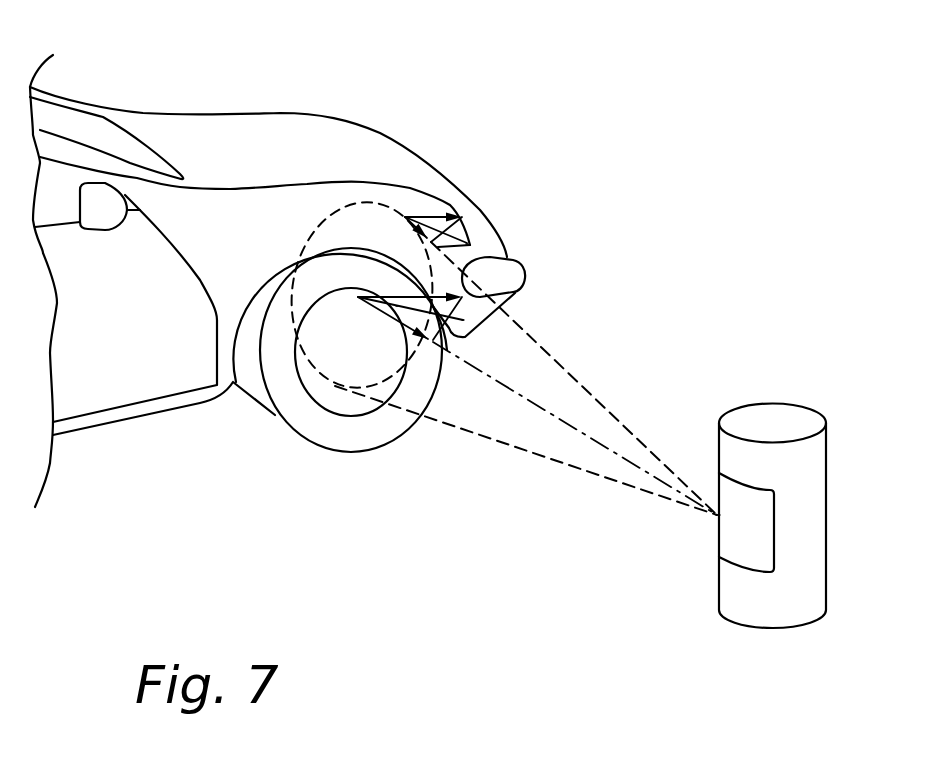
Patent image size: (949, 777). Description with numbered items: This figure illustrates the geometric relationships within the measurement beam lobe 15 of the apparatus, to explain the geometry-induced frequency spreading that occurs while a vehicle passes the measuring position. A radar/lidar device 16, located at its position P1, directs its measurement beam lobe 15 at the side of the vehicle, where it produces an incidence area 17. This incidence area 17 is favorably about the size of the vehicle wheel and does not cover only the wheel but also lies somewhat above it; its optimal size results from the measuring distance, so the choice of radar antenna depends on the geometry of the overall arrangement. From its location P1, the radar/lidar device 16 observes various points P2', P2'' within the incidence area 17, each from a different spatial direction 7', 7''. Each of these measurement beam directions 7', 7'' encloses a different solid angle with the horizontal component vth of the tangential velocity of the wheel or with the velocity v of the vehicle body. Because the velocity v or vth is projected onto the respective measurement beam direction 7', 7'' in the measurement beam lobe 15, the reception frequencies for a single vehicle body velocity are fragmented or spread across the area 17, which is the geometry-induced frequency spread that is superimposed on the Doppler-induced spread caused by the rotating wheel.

The incidence area 17 is at (305, 240).
The measurement beam lobe 15 is at (640, 455).
The radar/lidar device 16 is at (827, 515).
The spatial direction 7' is at (574, 378).
The spatial direction 7'' is at (526, 450).
The location of the radar/lidar device P1 is at (773, 627).
The point in the area of incidence P2' is at (436, 144).
The point in the area of incidence P2'' is at (348, 177).
The velocity of the vehicle body v is at (437, 216).
The horizontal component of the tangential velocity vth is at (397, 306).